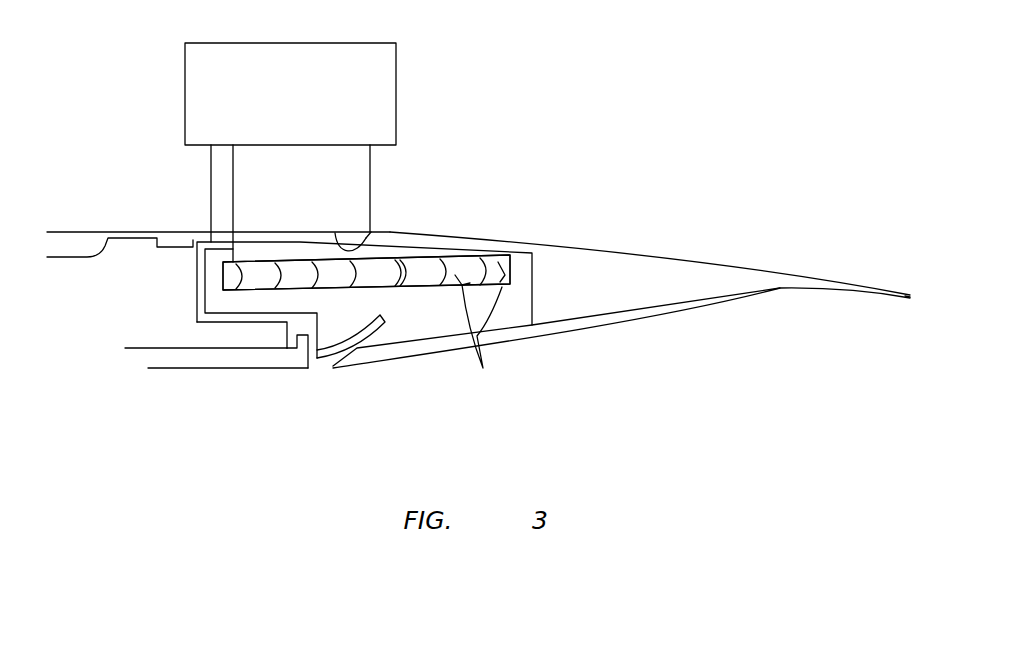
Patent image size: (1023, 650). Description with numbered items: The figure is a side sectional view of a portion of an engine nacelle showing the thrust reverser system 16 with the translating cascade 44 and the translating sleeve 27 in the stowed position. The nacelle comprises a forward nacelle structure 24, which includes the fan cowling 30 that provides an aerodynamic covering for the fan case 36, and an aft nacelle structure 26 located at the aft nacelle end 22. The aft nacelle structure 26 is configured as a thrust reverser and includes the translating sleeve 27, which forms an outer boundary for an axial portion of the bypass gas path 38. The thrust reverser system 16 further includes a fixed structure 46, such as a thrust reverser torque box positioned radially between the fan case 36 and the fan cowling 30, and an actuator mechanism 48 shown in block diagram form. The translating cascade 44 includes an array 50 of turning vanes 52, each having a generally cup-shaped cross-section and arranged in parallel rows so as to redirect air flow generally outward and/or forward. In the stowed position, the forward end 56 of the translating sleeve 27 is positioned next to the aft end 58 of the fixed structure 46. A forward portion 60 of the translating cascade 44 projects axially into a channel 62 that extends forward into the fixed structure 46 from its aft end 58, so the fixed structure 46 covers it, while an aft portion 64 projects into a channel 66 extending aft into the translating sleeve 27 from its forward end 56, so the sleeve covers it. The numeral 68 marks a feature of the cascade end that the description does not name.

The thrust reverser system 16 is at (576, 145).
The aft nacelle end 22 is at (914, 297).
The forward nacelle structure 24 is at (126, 225).
The aft nacelle structure 26 is at (800, 269).
The translating sleeve 27 is at (693, 256).
The fan cowling 30 is at (63, 230).
The fan case 36 is at (168, 370).
The bypass gas path 38 is at (236, 475).
The translating cascade 44 is at (421, 255).
The fixed structure 46 is at (193, 305).
The actuator mechanism 48 is at (398, 78).
The array of turning vanes 50 is at (366, 272).
The turning vanes 52 is at (480, 338).
The forward end of translating sleeve 56 is at (336, 233).
The aft end of fixed structure 58 is at (372, 232).
The forward portion of translating cascade 60 is at (260, 253).
The channel in fixed structure 62 is at (256, 302).
The aft portion of translating cascade 64 is at (454, 255).
The channel in translating sleeve 66 is at (430, 325).
The sensor end 68 is at (508, 262).